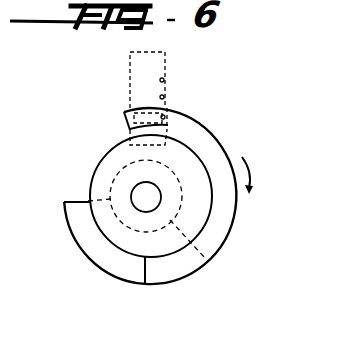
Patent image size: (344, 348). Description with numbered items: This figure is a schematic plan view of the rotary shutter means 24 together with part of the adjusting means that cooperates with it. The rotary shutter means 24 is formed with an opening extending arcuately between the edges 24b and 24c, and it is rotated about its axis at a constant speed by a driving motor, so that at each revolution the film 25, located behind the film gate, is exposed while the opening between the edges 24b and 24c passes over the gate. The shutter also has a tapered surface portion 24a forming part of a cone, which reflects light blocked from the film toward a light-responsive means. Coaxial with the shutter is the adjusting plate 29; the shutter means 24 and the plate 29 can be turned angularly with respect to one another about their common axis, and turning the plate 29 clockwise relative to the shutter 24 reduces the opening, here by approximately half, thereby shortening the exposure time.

The rotary shutter means 24 is at (94, 159).
The tapered surface portion 24a is at (212, 143).
The edge of shutter opening 24b is at (139, 281).
The edge of shutter opening 24c is at (128, 116).
The film 25 is at (130, 78).
The adjusting plate 29 is at (78, 211).